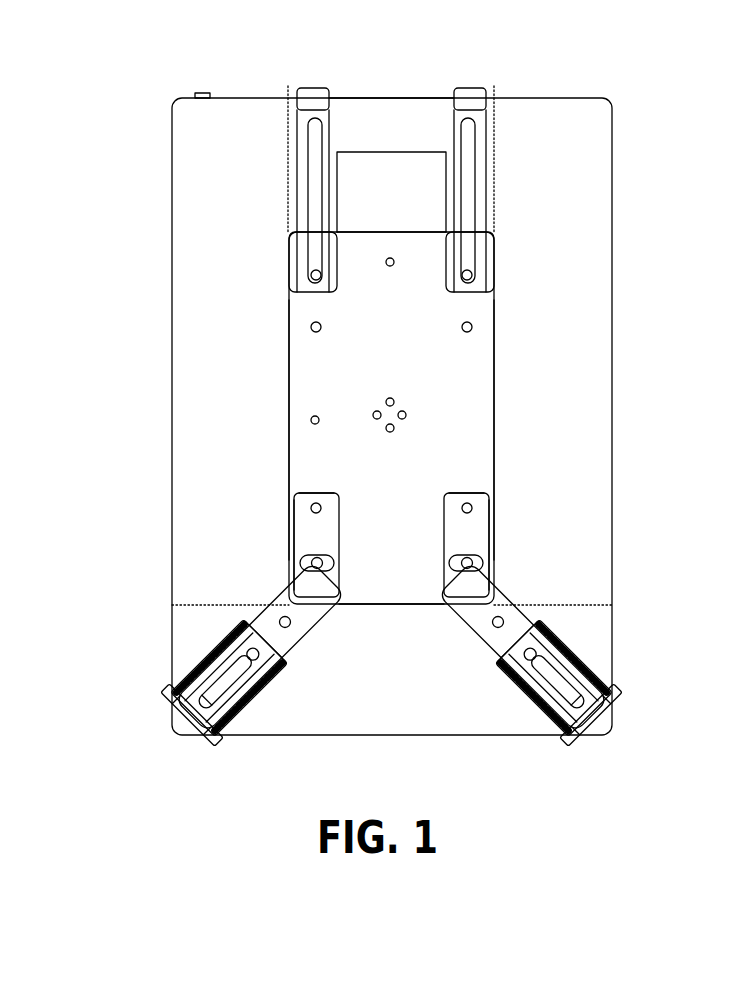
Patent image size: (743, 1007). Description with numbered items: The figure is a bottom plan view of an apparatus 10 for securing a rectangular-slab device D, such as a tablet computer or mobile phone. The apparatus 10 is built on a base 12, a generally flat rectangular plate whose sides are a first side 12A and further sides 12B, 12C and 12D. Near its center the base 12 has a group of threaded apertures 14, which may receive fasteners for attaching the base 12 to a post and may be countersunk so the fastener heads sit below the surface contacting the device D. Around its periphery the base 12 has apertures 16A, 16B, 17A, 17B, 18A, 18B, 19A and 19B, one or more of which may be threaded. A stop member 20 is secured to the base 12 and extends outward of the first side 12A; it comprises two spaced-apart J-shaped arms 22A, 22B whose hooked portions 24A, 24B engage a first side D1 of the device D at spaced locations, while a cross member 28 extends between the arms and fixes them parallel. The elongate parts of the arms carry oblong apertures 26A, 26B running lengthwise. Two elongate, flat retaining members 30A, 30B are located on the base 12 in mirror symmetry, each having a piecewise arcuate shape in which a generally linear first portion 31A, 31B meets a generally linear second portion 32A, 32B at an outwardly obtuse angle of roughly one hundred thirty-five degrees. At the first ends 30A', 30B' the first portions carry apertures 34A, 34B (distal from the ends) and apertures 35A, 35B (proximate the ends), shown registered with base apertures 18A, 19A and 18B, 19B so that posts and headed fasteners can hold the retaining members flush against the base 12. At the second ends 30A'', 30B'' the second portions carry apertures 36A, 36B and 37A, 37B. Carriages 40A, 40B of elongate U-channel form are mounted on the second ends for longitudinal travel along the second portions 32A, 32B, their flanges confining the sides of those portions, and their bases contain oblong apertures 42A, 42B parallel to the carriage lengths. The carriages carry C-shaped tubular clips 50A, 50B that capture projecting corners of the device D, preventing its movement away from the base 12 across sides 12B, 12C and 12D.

The apparatus 10 is at (447, 232).
The base 12 is at (402, 367).
The first side of base 12A is at (377, 238).
The side of base 12B is at (287, 375).
The side of base 12C is at (496, 375).
The side of base 12D is at (384, 601).
The threaded apertures 14 is at (370, 405).
The peripheral aperture 16A is at (311, 279).
The peripheral aperture 16B is at (472, 279).
The peripheral aperture 17A is at (312, 330).
The peripheral aperture 17B is at (472, 330).
The peripheral aperture 18A is at (311, 508).
The peripheral aperture 18B is at (472, 511).
The peripheral aperture 19A is at (311, 563).
The peripheral aperture 19B is at (472, 565).
The stop member 20 is at (337, 161).
The arm 22A is at (297, 185).
The arm 22B is at (486, 187).
The hooked portion 24A is at (318, 90).
The hooked portion 24B is at (470, 90).
The oblong aperture 26A is at (310, 202).
The oblong aperture 26B is at (473, 202).
The cross member 28 is at (370, 110).
The retaining member 30A is at (283, 647).
The retaining member 30B is at (499, 647).
The first end of retaining member 30A' is at (279, 513).
The first end of retaining member 30B' is at (514, 518).
The second end of retaining member 30A'' is at (187, 647).
The second end of retaining member 30B'' is at (596, 648).
The first portion 31A is at (296, 512).
The first portion 31B is at (492, 507).
The second portion 32A is at (262, 608).
The second portion 32B is at (484, 639).
The aperture 34A is at (335, 559).
The aperture 34B is at (448, 553).
The aperture 35A is at (318, 505).
The aperture 35B is at (471, 492).
The aperture 36A is at (290, 628).
The aperture 36B is at (500, 615).
The aperture 37A is at (261, 657).
The aperture 37B is at (519, 655).
The carriage 40A is at (246, 702).
The carriage 40B is at (558, 699).
The oblong aperture 42A is at (219, 702).
The oblong aperture 42B is at (562, 702).
The clip 50A is at (166, 694).
The clip 50B is at (617, 696).
The device D is at (550, 431).
The first side of device D1 is at (516, 97).